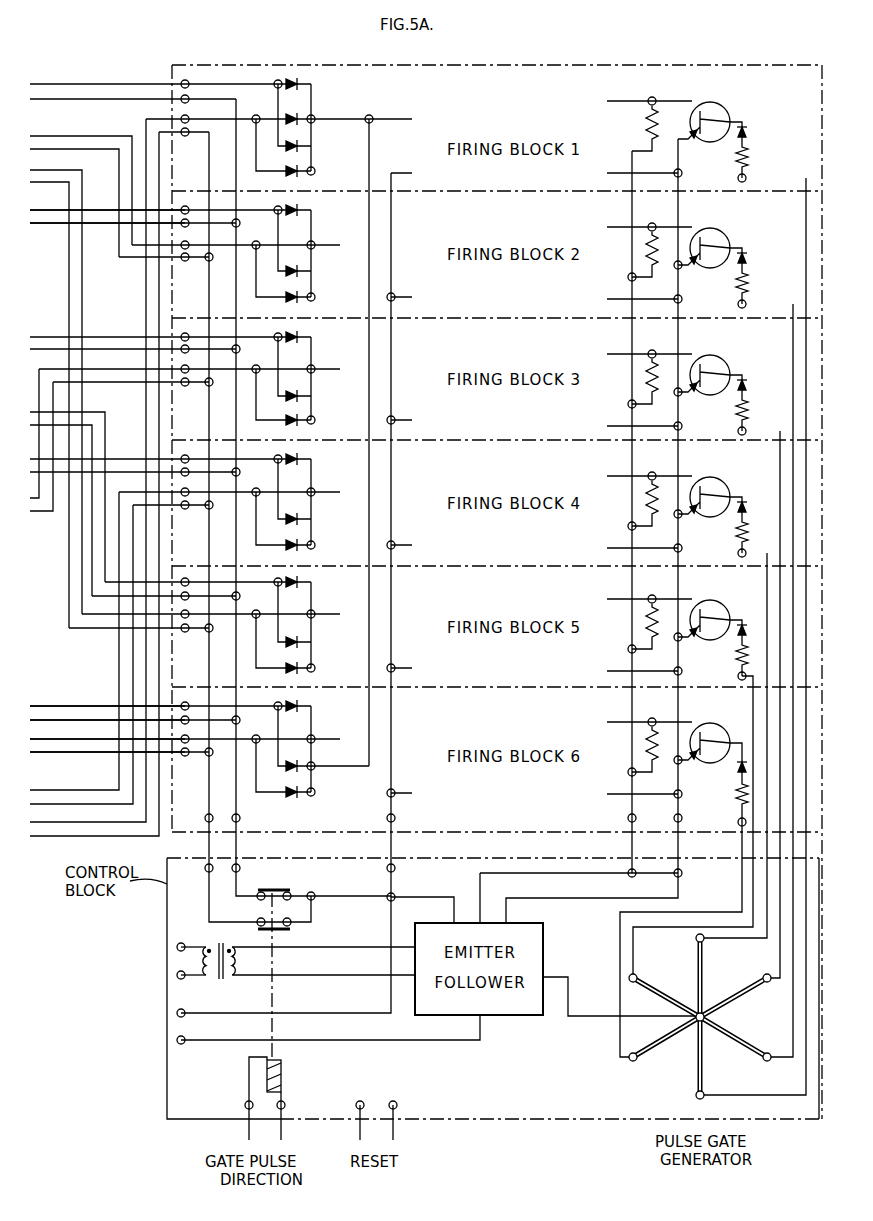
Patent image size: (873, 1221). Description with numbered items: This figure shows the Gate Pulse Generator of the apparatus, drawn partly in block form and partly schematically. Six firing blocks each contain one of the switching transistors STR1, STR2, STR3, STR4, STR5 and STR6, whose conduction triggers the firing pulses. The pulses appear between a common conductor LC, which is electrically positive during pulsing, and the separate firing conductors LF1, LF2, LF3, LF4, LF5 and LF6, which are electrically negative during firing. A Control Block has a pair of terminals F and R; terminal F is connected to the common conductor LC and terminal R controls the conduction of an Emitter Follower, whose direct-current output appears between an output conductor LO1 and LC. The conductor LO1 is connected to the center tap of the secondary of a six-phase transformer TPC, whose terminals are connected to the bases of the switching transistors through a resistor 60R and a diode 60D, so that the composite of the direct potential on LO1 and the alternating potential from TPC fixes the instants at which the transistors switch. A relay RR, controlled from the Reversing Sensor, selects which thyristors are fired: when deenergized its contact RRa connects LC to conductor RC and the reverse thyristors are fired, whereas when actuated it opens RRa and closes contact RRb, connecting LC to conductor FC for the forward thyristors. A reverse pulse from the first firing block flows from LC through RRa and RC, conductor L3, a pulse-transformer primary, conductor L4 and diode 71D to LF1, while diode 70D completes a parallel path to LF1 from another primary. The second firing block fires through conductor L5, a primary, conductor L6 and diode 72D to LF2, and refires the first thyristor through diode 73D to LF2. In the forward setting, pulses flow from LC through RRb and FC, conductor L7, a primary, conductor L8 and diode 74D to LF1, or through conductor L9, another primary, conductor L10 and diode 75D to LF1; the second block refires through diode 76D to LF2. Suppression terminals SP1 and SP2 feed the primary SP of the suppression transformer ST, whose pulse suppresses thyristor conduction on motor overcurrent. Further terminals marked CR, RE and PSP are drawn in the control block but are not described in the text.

The diode 70D is at (303, 82).
The diode 74D is at (303, 124).
The diode 73D is at (303, 149).
The diode 76D is at (306, 174).
The diode 72D is at (303, 212).
The diode 71D is at (303, 762).
The diode 75D is at (303, 796).
The firing conductor LF1 is at (330, 119).
The firing conductor LF2 is at (318, 245).
The firing conductor LF3 is at (329, 369).
The firing conductor LF4 is at (329, 492).
The firing conductor LF5 is at (329, 614).
The firing conductor LF6 is at (329, 739).
The conductor L3 is at (84, 721).
The conductor L4 is at (72, 706).
The conductor L5 is at (55, 224).
The conductor L6 is at (55, 210).
The conductor L7 is at (161, 178).
The conductor L8 is at (144, 121).
The conductor L9 is at (119, 258).
The conductor L10 is at (130, 240).
The common conductor LC is at (393, 410).
The conductor FC is at (208, 800).
The conductor RC is at (237, 808).
The switching transistor STR1 is at (716, 103).
The switching transistor STR2 is at (716, 229).
The switching transistor STR3 is at (716, 356).
The switching transistor STR4 is at (716, 478).
The switching transistor STR5 is at (716, 601).
The switching transistor STR6 is at (716, 724).
The diode 60D is at (747, 131).
The resistor 60R is at (747, 152).
The relay contact RRa is at (292, 890).
The relay contact RRb is at (292, 928).
The relay RR is at (283, 1073).
The control relay terminal CR is at (286, 1105).
The reset terminal RE is at (360, 1101).
The pulse supply terminal PSP is at (245, 1105).
The suppression terminal SP1 is at (176, 947).
The suppression terminal SP2 is at (176, 975).
The primary of suppression transformer SP is at (202, 976).
The suppression transformer ST is at (237, 978).
The terminal F is at (176, 1013).
The terminal R is at (176, 1040).
The output conductor LO1 is at (570, 994).
The six-phase transformer TPC is at (682, 1082).